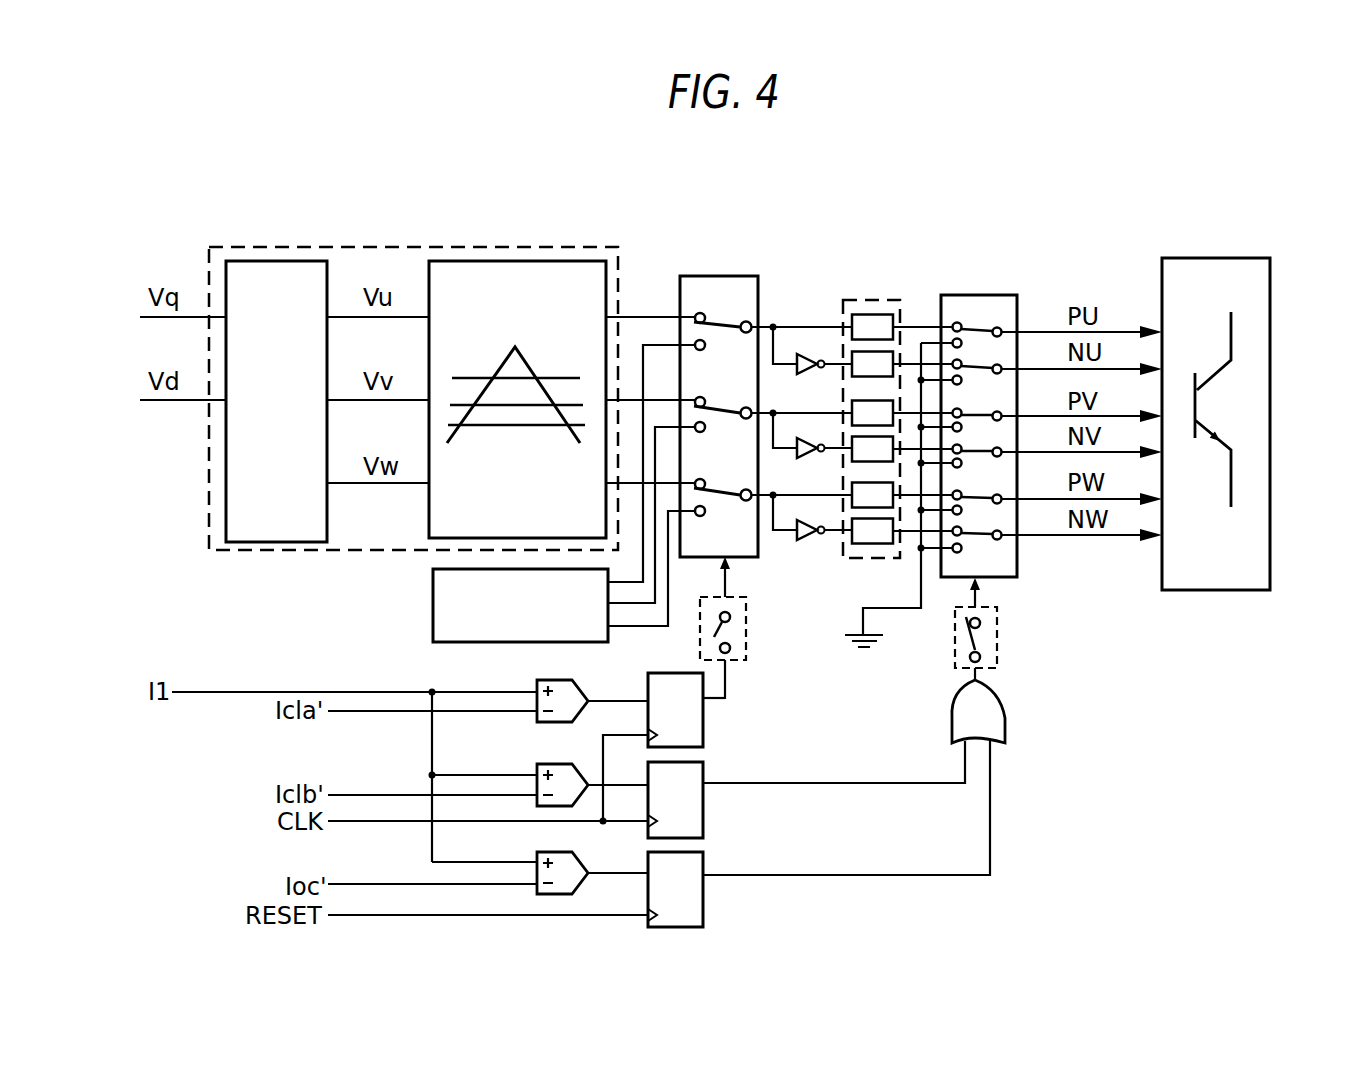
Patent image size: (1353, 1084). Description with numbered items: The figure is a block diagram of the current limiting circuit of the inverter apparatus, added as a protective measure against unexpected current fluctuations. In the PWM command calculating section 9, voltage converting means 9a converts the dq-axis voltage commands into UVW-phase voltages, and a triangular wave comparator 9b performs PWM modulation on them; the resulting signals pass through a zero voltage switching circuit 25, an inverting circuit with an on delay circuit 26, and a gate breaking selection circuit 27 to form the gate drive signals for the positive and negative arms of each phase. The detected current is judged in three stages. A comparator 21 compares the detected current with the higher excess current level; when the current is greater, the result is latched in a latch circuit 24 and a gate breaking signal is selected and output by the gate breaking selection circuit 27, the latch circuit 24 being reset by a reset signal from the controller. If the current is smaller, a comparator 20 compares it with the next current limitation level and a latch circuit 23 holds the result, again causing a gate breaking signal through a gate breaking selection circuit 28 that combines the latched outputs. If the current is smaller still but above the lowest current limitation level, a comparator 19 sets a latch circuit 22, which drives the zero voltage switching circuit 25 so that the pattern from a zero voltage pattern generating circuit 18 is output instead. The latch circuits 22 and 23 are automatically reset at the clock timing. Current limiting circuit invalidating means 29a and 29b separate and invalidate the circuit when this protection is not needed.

The PWM command calculating section 9 is at (405, 246).
The voltage converting means 9a is at (273, 261).
The triangular wave comparator 9b is at (519, 261).
The 0 voltage pattern generating circuit 18 is at (433, 600).
The comparator 19 is at (537, 686).
The comparator 20 is at (537, 767).
The comparator 21 is at (537, 856).
The latch circuit 22 is at (703, 725).
The latch circuit 23 is at (703, 812).
The latch circuit 24 is at (703, 898).
The 0 voltage switching circuit 25 is at (718, 276).
The on delay circuit 26 is at (872, 300).
The gate breaking selection circuit 27 is at (978, 295).
The gate breaking selection circuit 28 is at (1005, 718).
The current limiting circuit invalidating means 29a is at (750, 639).
The current limiting circuit invalidating means 29b is at (1000, 648).